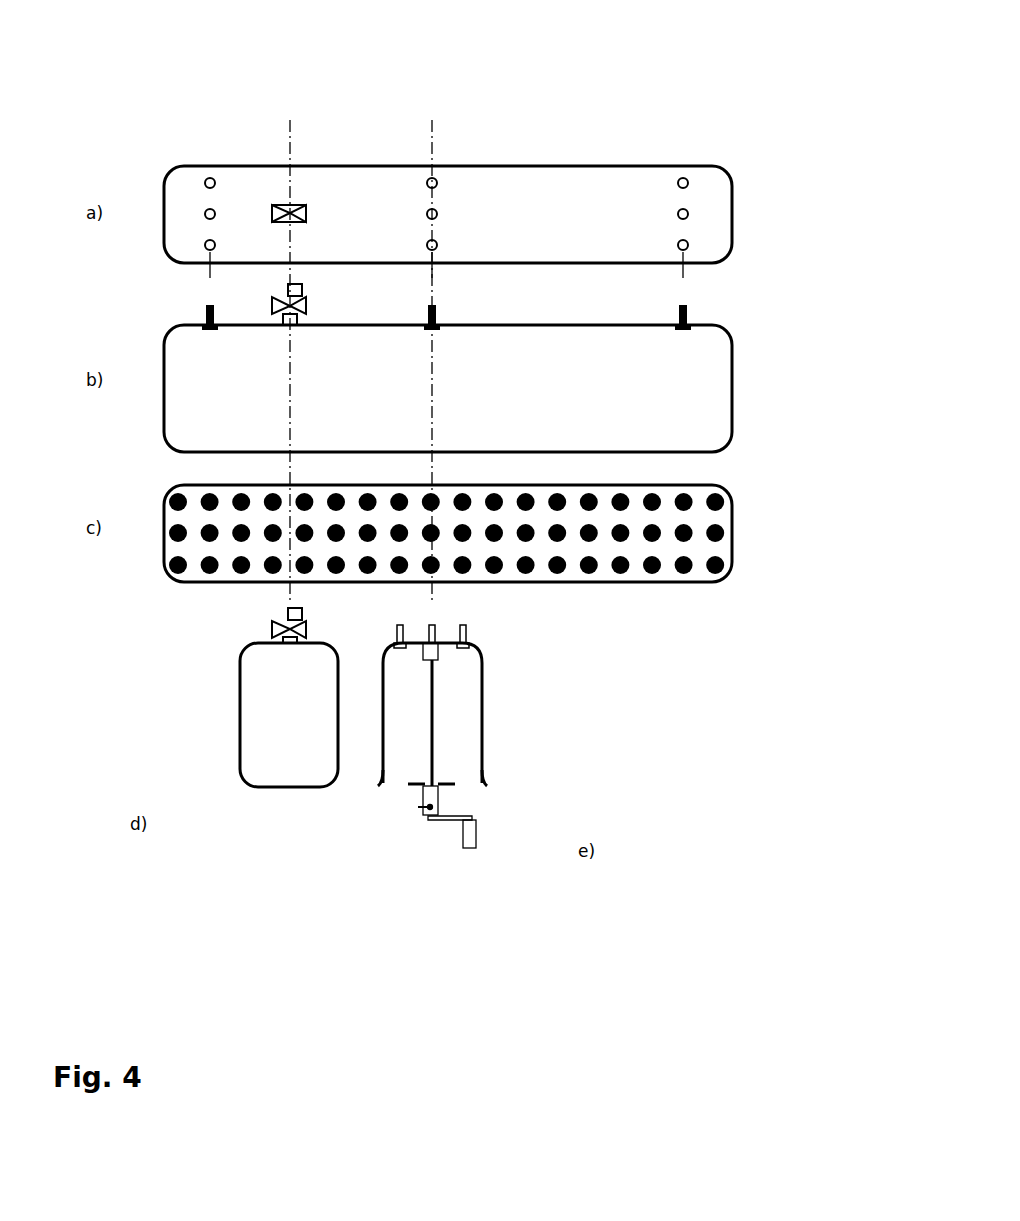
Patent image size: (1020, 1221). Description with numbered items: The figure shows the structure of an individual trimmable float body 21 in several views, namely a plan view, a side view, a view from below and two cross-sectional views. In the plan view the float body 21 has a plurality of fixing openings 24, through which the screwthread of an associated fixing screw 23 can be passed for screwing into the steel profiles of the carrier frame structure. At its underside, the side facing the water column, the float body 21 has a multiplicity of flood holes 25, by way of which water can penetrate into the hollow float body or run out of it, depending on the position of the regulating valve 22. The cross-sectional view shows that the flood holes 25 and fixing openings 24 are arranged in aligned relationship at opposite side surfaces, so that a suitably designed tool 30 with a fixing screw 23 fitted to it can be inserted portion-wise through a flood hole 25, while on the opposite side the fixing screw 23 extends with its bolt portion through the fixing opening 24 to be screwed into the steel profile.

The float body 21 is at (575, 185).
The regulating valve 22 is at (297, 205).
The fixing screw 23 is at (467, 631).
The fixing opening 24 is at (685, 241).
The flood hole 25 is at (720, 565).
The tool 30 is at (428, 812).